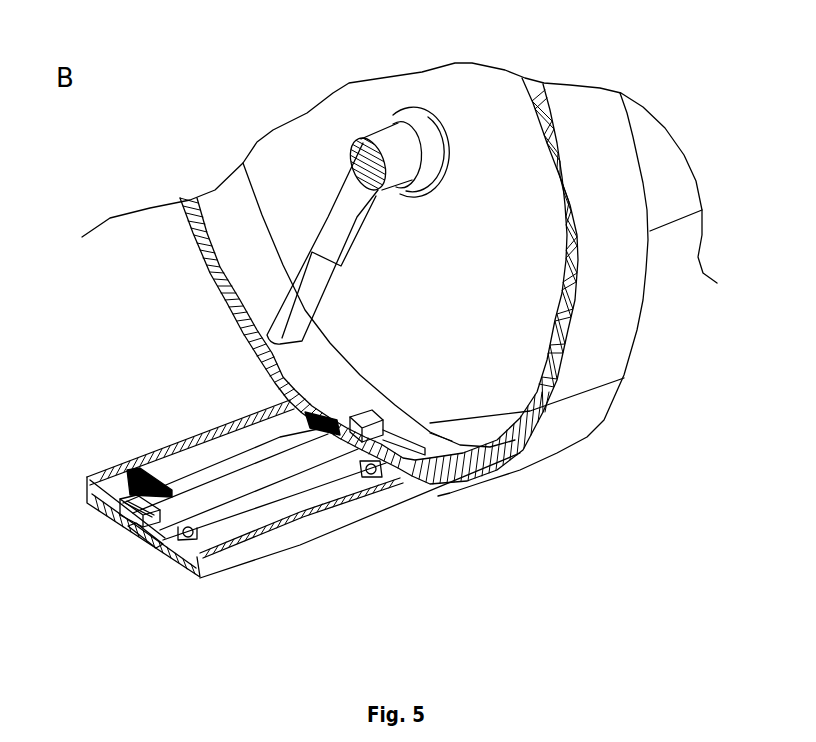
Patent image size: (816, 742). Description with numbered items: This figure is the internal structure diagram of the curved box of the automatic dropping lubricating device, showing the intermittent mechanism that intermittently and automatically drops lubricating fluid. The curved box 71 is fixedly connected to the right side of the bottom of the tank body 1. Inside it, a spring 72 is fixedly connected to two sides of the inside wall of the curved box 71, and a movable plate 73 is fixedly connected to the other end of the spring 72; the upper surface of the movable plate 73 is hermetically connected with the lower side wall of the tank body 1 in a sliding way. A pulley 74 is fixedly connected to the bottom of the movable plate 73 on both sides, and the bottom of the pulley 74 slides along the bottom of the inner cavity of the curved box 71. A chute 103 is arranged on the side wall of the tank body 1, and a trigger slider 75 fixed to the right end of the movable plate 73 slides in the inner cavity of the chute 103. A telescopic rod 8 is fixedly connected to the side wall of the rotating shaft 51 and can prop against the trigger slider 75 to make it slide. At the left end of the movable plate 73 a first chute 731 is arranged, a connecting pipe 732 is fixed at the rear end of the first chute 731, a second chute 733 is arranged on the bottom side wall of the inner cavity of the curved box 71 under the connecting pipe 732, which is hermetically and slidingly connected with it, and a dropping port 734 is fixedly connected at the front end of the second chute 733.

The tank body 1 is at (607, 292).
The chute 103 is at (624, 378).
The rotating shaft 51 is at (393, 147).
The telescopic rod 8 is at (325, 212).
The spring 72 is at (325, 410).
The trigger slider 75 is at (369, 413).
The pulley 74 is at (407, 483).
The curved box 71 is at (320, 532).
The movable plate 73 is at (253, 480).
The first chute 731 is at (130, 470).
The connecting pipe 732 is at (125, 518).
The second chute 733 is at (133, 540).
The dropping port 734 is at (157, 563).